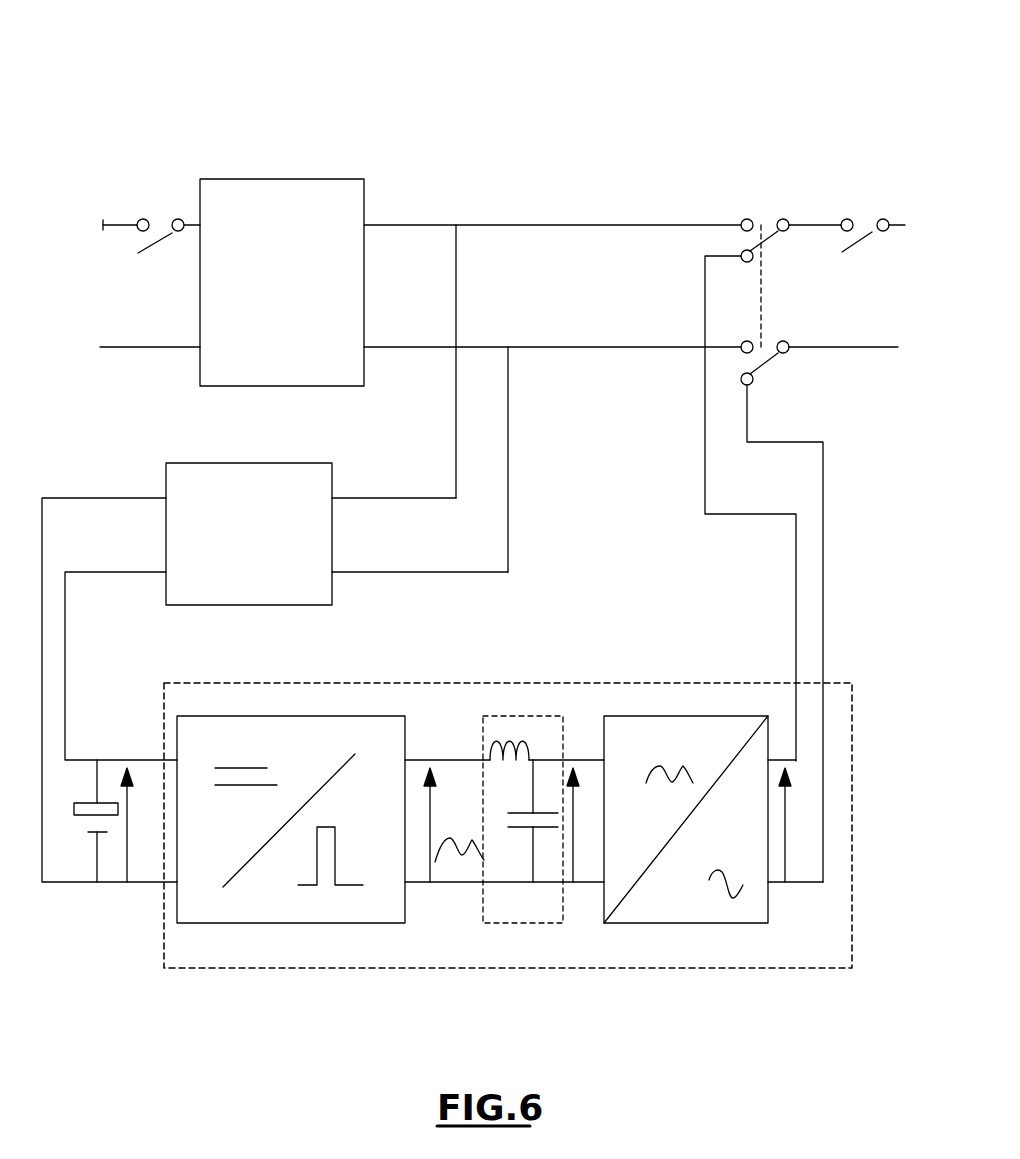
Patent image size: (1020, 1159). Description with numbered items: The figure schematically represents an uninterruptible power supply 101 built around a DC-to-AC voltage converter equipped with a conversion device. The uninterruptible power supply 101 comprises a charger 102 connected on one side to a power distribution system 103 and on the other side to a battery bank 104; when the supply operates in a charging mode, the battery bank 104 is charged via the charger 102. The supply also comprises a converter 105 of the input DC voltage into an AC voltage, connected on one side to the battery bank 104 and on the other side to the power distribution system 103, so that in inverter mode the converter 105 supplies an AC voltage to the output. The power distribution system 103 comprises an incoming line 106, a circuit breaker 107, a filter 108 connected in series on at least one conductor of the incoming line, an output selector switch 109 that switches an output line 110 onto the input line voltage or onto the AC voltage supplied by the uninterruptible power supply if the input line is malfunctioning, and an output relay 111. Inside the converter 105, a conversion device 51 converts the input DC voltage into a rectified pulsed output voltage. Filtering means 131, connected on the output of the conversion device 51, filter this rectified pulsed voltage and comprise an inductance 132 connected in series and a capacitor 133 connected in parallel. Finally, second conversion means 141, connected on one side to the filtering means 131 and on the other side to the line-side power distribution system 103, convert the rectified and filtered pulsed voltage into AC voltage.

The uninterruptible power supply 101 is at (622, 92).
The charger 102 is at (185, 463).
The power distribution system 103 is at (410, 347).
The battery bank 104 is at (101, 815).
The DC-to-AC voltage converter 105 is at (502, 683).
The incoming line 106 is at (93, 284).
The circuit breaker 107 is at (157, 238).
The filter 108 is at (330, 179).
The output selector switch 109 is at (762, 242).
The output line 110 is at (878, 311).
The output relay 111 is at (863, 230).
The conversion device 51 is at (280, 716).
The filtering means 131 is at (548, 716).
The inductance 132 is at (511, 735).
The capacitor 133 is at (518, 835).
The second conversion means 141 is at (674, 923).